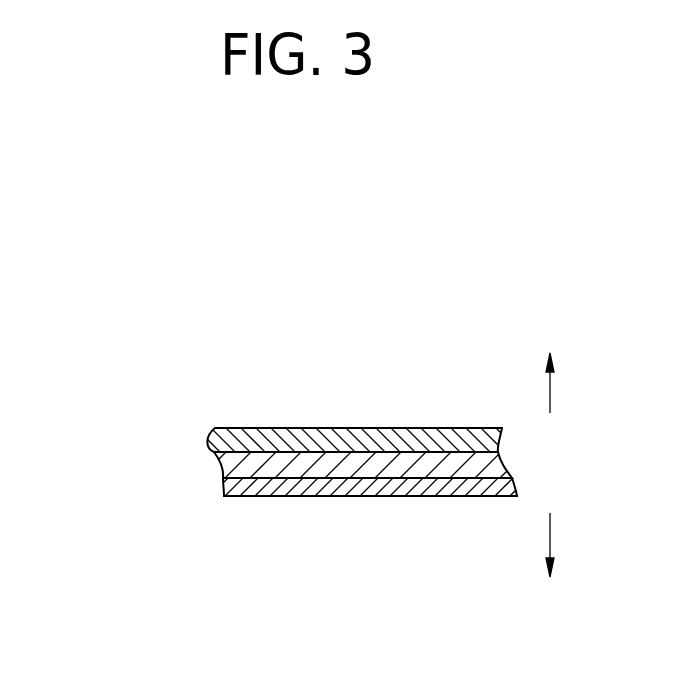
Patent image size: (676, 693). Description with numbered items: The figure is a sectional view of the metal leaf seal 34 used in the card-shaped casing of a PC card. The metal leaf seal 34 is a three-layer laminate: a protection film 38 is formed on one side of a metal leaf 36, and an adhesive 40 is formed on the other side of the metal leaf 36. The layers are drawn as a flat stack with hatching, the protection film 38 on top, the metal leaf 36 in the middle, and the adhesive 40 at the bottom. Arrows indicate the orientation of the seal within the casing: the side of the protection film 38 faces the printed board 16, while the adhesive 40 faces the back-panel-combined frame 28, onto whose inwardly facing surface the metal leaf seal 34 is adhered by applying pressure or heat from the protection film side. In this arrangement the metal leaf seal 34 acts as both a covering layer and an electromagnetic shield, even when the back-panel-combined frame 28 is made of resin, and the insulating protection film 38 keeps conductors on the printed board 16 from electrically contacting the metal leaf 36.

The metal leaf seal 34 is at (212, 578).
The metal leaf 36 is at (223, 467).
The protection film 38 is at (214, 443).
The adhesive 40 is at (363, 496).
The printed board 16 is at (549, 362).
The back-panel-combined frame 28 is at (550, 565).